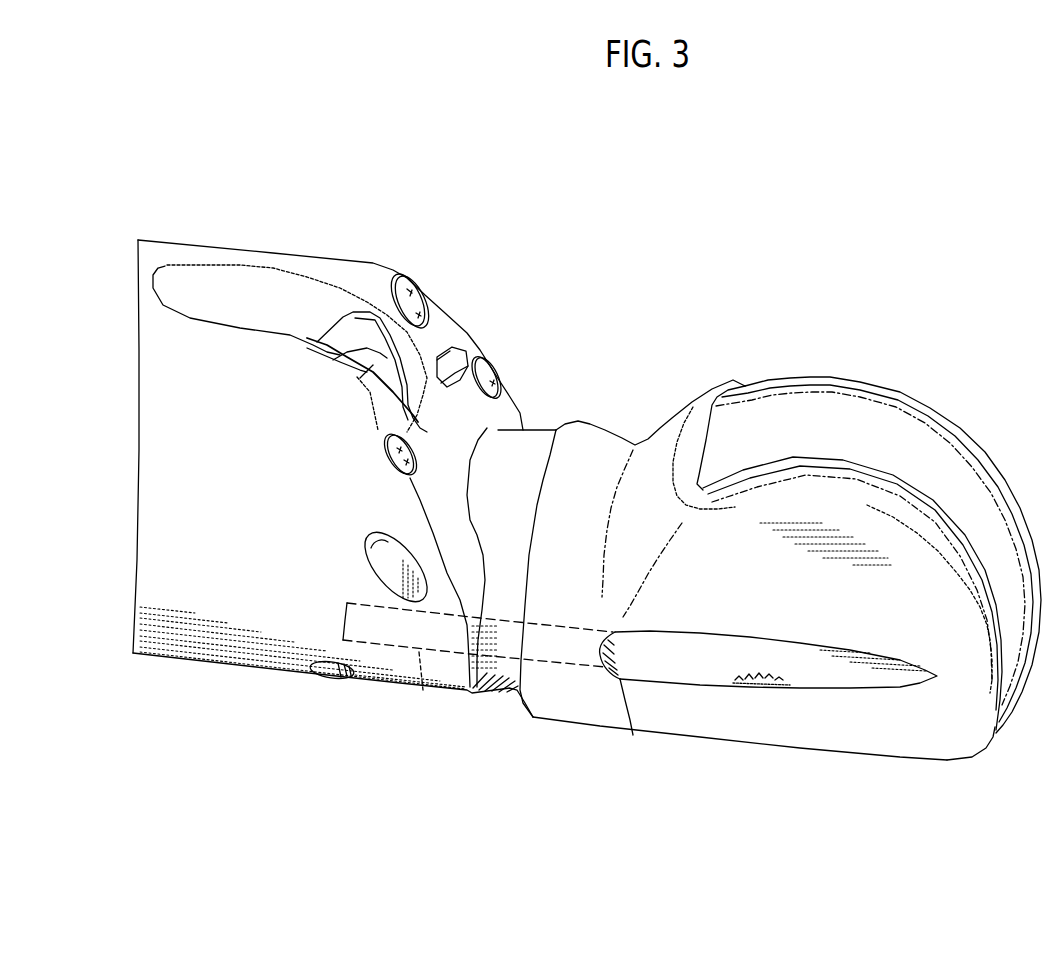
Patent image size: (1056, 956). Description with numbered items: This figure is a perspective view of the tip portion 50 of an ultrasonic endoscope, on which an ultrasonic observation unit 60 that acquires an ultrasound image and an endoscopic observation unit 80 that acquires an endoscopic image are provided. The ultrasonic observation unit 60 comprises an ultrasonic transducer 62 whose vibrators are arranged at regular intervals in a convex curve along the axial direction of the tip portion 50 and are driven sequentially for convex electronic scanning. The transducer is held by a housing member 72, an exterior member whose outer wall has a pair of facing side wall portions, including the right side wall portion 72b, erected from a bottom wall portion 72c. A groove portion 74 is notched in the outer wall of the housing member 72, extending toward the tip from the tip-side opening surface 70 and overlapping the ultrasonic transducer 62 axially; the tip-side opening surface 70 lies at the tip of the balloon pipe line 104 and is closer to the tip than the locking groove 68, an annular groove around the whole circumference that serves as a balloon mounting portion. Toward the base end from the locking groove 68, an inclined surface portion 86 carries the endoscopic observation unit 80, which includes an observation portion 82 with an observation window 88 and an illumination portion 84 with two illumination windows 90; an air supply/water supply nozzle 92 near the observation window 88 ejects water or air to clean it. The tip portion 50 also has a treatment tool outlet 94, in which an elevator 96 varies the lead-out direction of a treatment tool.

The tip portion 50 is at (587, 513).
The ultrasonic observation unit 60 is at (872, 523).
The ultrasonic transducer 62 is at (878, 555).
The locking groove 68 is at (495, 686).
The tip-side opening surface 70 is at (632, 585).
The housing member 72 is at (764, 582).
The right side wall portion 72b is at (729, 407).
The bottom wall portion 72c is at (740, 778).
The groove portion 74 is at (776, 672).
The endoscopic observation unit 80 is at (373, 477).
The observation portion 82 is at (419, 270).
The illumination portion 84 is at (503, 347).
The inclined surface portion 86 is at (474, 557).
The observation window 88 is at (419, 291).
The illumination window 90 is at (446, 416).
The air supply/water supply nozzle 92 is at (476, 347).
The treatment tool outlet 94 is at (290, 324).
The elevator 96 is at (352, 372).
The balloon pipe line 104 is at (461, 668).